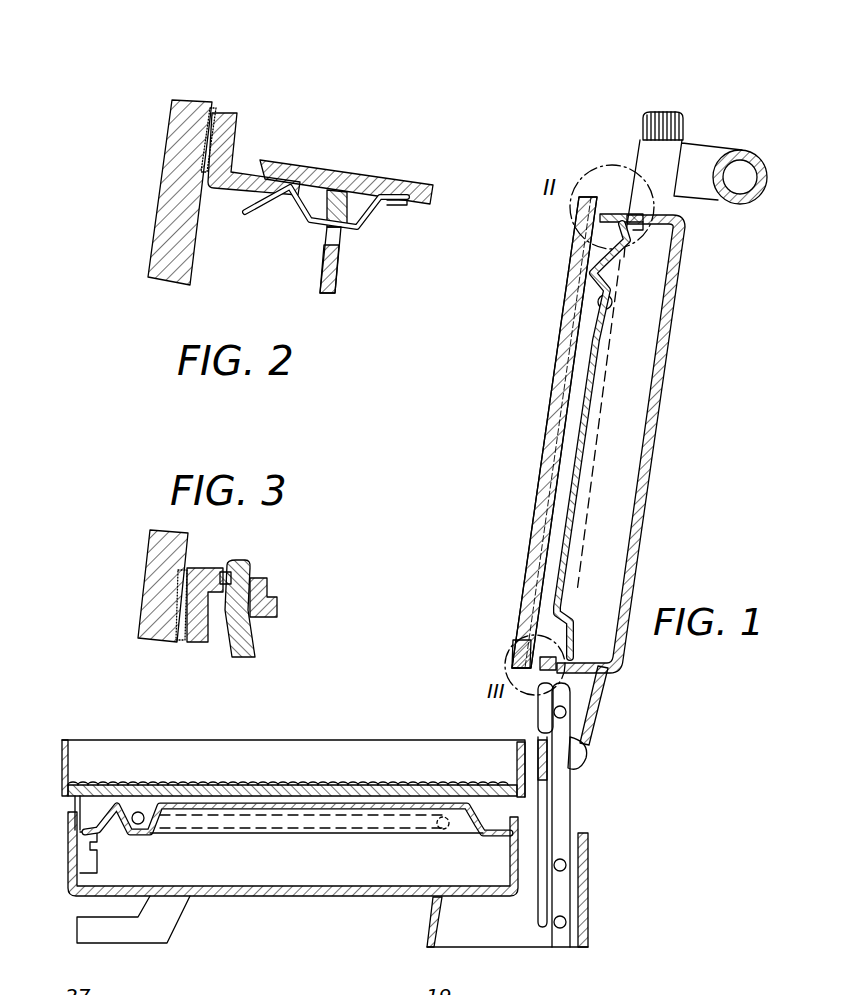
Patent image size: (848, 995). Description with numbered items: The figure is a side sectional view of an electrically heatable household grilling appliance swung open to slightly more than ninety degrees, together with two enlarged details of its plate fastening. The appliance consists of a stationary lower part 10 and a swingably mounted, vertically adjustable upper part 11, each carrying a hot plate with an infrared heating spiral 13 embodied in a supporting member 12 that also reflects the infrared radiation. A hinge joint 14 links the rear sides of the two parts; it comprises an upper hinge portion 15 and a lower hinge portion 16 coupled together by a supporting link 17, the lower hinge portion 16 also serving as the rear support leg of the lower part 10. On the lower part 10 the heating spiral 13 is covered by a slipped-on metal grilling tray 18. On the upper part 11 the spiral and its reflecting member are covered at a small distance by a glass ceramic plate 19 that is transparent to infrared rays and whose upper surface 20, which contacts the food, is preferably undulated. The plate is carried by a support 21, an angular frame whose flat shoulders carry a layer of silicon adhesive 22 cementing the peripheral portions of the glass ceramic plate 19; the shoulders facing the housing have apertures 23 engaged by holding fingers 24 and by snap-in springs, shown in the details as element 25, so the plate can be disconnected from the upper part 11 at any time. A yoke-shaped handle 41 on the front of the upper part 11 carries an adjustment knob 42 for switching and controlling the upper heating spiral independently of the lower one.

In FIG. 1, the lower part 10 is at (295, 900).
In FIG. 1, the upper part 11 is at (670, 455).
In FIG. 2, the upper part 11 is at (378, 183).
In FIG. 1, the supporting member 12 is at (570, 470).
In FIG. 1, the infrared heating spiral 13 is at (598, 303).
In FIG. 1, the hinge joint 14 is at (600, 747).
In FIG. 1, the upper hinge portion 15 is at (603, 700).
In FIG. 1, the lower hinge portion 16 is at (588, 865).
In FIG. 1, the supporting link 17 is at (583, 782).
In FIG. 1, the grilling tray 18 is at (317, 752).
In FIG. 1, the glass ceramic plate 19 is at (560, 378).
In FIG. 2, the glass ceramic plate 19 is at (157, 240).
In FIG. 3, the glass ceramic plate 19 is at (152, 603).
In FIG. 1, the upper surface 20 is at (538, 436).
In FIG. 1, the support 21 is at (582, 235).
In FIG. 2, the support 21 is at (228, 135).
In FIG. 3, the support 21 is at (188, 642).
In FIG. 2, the silicon adhesive 22 is at (215, 113).
In FIG. 3, the silicon adhesive 22 is at (187, 573).
In FIG. 2, the apertures 23 is at (322, 142).
In FIG. 3, the apertures 23 is at (223, 573).
In FIG. 1, the holding fingers 24 is at (553, 663).
In FIG. 3, the holding fingers 24 is at (247, 563).
In FIG. 1, the flange 25 is at (673, 240).
In FIG. 2, the flange 25 is at (367, 222).
In FIG. 1, the yoke-shaped handle 41 is at (713, 153).
In FIG. 1, the adjustment knob 42 is at (643, 130).